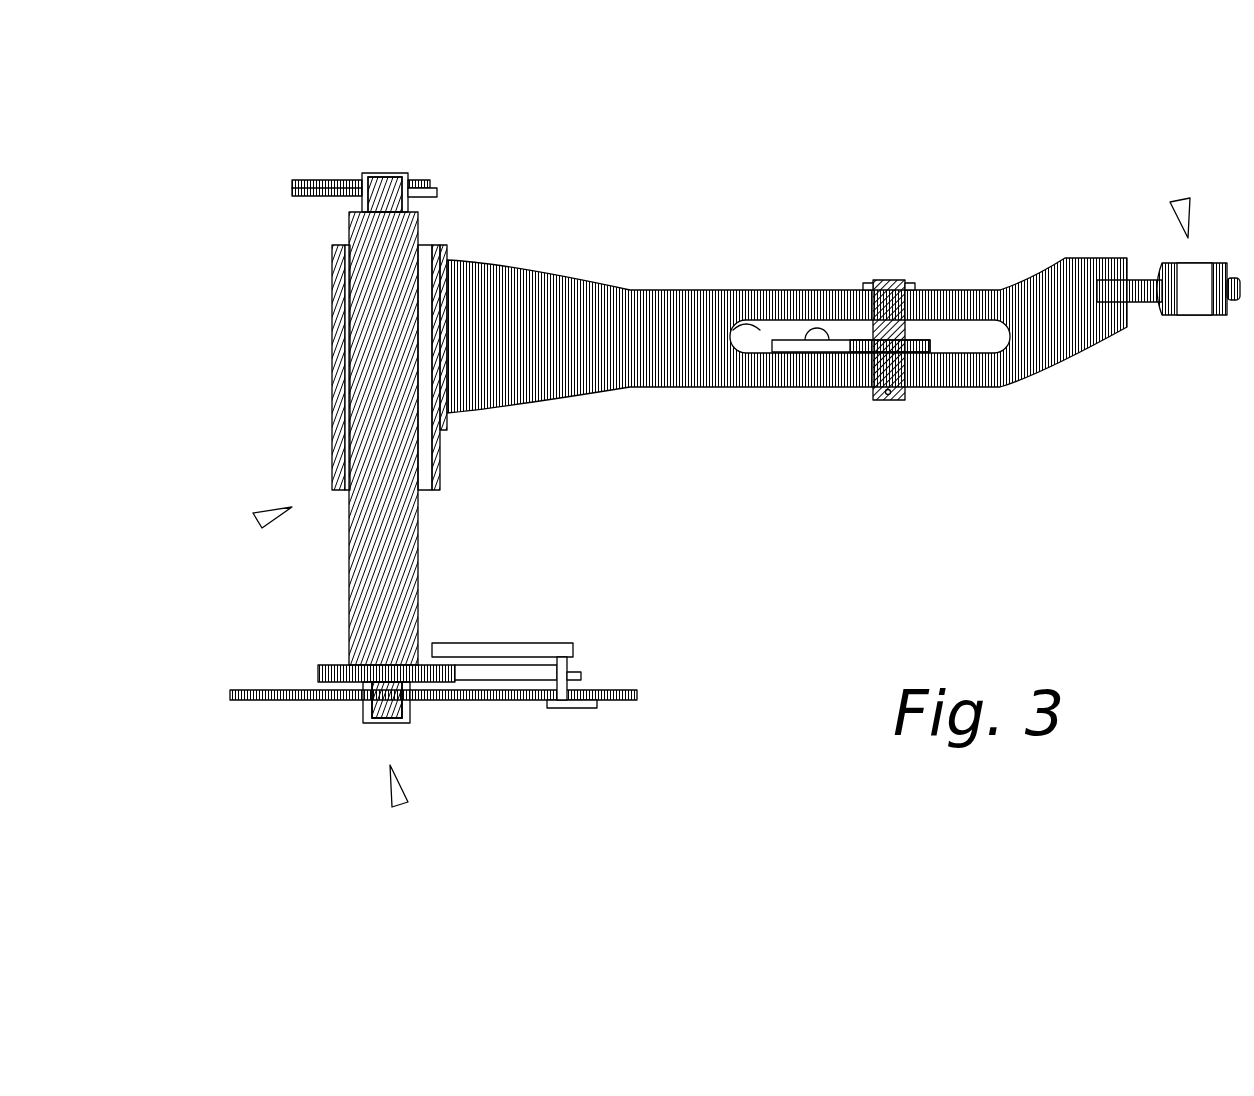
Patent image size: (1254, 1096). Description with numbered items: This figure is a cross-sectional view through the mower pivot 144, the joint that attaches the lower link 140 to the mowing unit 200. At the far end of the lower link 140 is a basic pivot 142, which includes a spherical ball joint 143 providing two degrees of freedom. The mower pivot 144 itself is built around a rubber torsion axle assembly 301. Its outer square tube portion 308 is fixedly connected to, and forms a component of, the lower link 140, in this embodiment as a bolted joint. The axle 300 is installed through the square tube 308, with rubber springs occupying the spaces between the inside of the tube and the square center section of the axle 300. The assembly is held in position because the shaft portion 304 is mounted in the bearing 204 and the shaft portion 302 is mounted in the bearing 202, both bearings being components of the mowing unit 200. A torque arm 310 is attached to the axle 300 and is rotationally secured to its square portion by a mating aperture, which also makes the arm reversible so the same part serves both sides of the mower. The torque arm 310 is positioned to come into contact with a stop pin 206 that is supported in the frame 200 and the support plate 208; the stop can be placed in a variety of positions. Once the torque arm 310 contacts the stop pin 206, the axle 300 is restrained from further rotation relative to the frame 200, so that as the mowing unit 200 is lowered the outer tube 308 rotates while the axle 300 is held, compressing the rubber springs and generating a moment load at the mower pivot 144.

The lower link 140 is at (636, 358).
The pivot 142 is at (1177, 200).
The spherical ball joint 143 is at (1210, 317).
The mower pivot 144 is at (396, 805).
The mowing unit 200 is at (432, 180).
The bearing 202 is at (362, 700).
The bearing 204 is at (362, 200).
The stop pin 206 is at (560, 672).
The support plate 208 is at (545, 645).
The axle 300 is at (412, 507).
The rubber torsion axle assembly 301 is at (258, 520).
The shaft portion 302 is at (387, 693).
The shaft portion 304 is at (385, 197).
The outer square tube portion 308 is at (440, 447).
The torque arm 310 is at (443, 697).